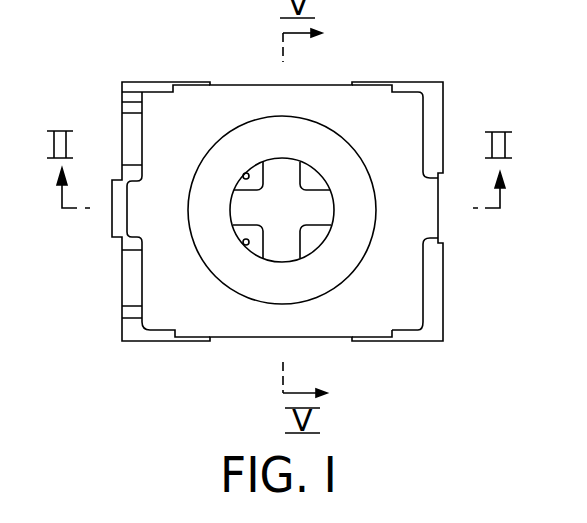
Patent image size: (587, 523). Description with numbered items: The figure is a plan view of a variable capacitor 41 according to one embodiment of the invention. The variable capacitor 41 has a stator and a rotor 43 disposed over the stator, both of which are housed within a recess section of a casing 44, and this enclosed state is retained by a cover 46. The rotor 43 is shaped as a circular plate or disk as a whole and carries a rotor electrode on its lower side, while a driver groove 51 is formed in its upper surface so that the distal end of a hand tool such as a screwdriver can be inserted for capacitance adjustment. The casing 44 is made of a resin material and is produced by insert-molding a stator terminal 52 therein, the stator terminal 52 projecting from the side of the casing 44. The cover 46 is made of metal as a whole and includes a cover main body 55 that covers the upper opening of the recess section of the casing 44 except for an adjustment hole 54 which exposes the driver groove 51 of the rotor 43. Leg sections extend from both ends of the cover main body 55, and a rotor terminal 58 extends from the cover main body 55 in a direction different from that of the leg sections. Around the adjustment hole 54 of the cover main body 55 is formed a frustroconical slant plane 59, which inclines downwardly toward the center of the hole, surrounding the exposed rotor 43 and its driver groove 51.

The variable capacitor 41 is at (97, 46).
The rotor 43 is at (310, 178).
The casing 44 is at (128, 351).
The cover 46 is at (228, 70).
The driver groove 51 is at (292, 248).
The stator terminal 52 is at (112, 227).
The adjustment hole 54 is at (257, 226).
The cover main body 55 is at (398, 312).
The rotor terminal 58 is at (440, 220).
The frustroconical slant plane 59 is at (217, 248).